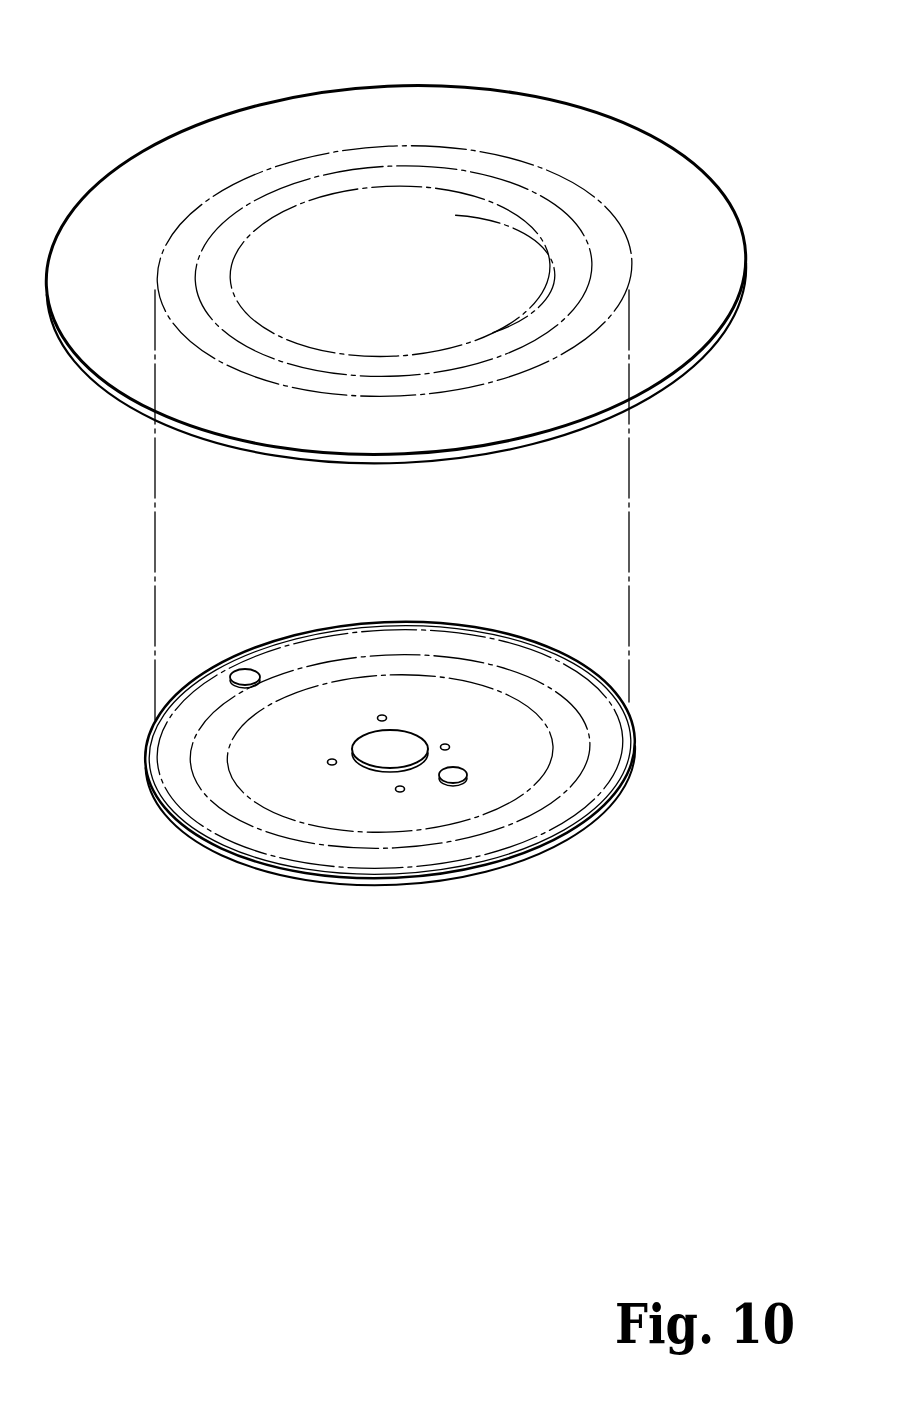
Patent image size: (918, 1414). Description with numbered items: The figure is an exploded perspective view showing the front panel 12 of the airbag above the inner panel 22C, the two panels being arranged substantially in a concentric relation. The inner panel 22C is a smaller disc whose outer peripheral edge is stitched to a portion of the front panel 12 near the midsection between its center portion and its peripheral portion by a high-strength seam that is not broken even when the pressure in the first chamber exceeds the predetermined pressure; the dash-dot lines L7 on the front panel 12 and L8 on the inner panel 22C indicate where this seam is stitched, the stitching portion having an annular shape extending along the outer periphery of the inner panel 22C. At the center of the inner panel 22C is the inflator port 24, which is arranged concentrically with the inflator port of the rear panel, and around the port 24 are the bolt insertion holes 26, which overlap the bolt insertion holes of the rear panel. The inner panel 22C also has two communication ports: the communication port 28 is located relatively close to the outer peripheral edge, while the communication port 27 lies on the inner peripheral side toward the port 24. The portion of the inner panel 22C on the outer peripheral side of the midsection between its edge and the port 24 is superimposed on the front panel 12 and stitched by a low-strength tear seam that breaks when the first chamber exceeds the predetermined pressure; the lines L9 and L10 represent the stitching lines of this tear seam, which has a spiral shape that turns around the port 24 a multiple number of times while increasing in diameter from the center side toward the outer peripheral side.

The front panel 12 is at (238, 106).
The line to be stitched by the seam 23G L7 is at (430, 146).
The line to be stitched by the tear seam 23H L9 is at (375, 356).
The inner panel 22C is at (293, 879).
The line to be stitched by the tear seam 23H L10 is at (503, 682).
The line to be stitched by the seam 23G L8 is at (599, 792).
The inflator port 24 is at (363, 767).
The bolt insertion holes 26 is at (428, 803).
The communication port 27 is at (467, 772).
The communication port 28 is at (257, 670).